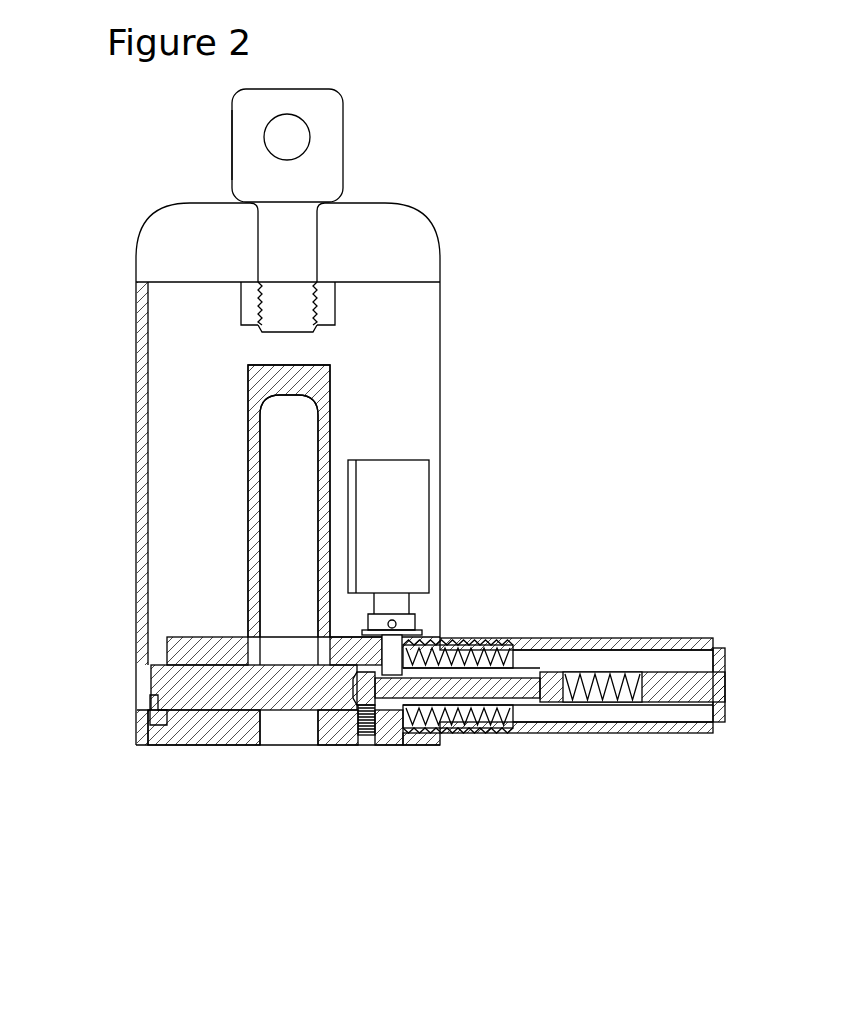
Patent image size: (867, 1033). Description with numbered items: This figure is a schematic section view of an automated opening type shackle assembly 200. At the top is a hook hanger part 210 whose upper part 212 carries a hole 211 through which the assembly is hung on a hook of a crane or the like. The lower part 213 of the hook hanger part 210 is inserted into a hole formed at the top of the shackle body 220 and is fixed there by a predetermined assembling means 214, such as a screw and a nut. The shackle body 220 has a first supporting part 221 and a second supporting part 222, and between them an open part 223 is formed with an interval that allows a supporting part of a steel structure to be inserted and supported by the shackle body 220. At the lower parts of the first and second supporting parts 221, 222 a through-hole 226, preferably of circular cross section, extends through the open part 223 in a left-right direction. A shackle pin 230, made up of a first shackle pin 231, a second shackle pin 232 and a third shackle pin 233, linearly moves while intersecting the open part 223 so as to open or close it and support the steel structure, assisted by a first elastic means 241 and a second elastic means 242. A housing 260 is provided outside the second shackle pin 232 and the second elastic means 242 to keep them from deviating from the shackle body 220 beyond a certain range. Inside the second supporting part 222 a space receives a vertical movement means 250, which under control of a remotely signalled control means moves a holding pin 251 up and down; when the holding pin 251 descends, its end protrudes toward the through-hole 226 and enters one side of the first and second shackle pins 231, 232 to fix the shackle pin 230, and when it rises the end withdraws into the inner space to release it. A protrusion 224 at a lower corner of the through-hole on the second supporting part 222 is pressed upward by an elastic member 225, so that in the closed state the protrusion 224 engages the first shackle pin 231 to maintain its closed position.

The automated shackle assembly 200 is at (560, 231).
The hook hanger part 210 is at (305, 145).
The hole 211 is at (292, 135).
The upper part 212 is at (237, 170).
The lower part 213 is at (293, 245).
The assembling means 214 is at (325, 303).
The shackle body 220 is at (357, 474).
The first supporting part 221 is at (246, 734).
The second supporting part 222 is at (348, 740).
The open part 223 is at (278, 555).
The protrusion 224 is at (383, 715).
The elastic member 225 is at (378, 718).
The through-hole 226 is at (137, 696).
The shackle pin 230 is at (454, 703).
The first shackle pin 231 is at (190, 682).
The second shackle pin 232 is at (680, 680).
The third shackle pin 233 is at (552, 680).
The first elastic means 241 is at (470, 652).
The second elastic means 242 is at (600, 672).
The vertical movement means 250 is at (441, 567).
The holding pin 251 is at (393, 640).
The housing 260 is at (608, 740).